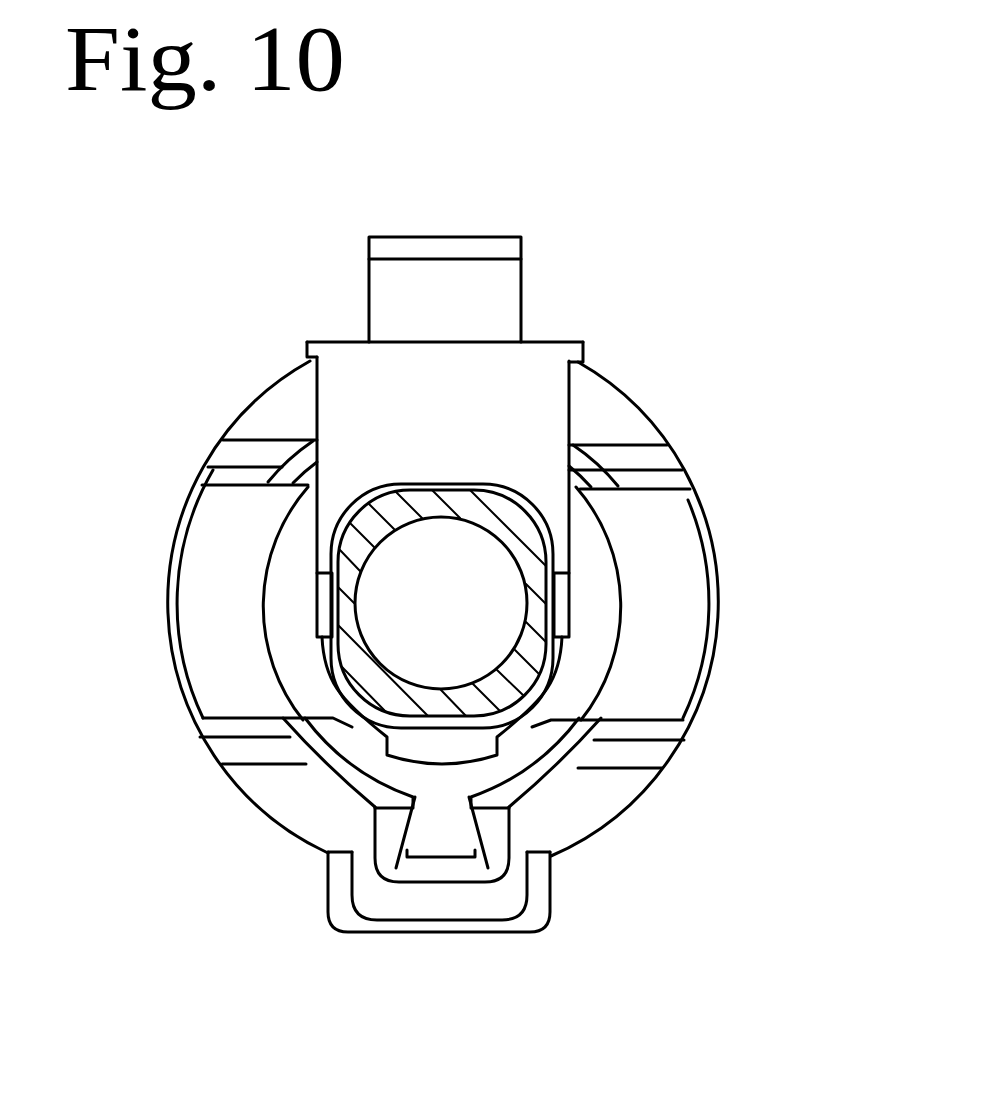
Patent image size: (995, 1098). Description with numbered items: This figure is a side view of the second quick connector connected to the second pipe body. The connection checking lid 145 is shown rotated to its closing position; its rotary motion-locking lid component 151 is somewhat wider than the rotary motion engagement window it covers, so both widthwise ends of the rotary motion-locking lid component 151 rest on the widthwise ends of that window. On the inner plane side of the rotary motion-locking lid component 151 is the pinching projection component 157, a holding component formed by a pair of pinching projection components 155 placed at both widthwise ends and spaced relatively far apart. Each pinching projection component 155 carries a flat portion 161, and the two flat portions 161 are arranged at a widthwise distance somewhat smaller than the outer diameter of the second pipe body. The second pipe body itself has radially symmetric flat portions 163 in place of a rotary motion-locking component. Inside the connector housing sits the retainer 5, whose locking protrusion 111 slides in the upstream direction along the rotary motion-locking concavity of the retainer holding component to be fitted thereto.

The connection checking lid 145 is at (613, 322).
The rotary motion-locking lid component 151 is at (345, 349).
The pinching projection component 157 is at (655, 413).
The pinching projection component 155 is at (335, 548).
The flat portion 161 is at (548, 585).
The flat portion 163 is at (320, 611).
The retainer 5 is at (672, 650).
The locking protrusion 111 is at (440, 833).